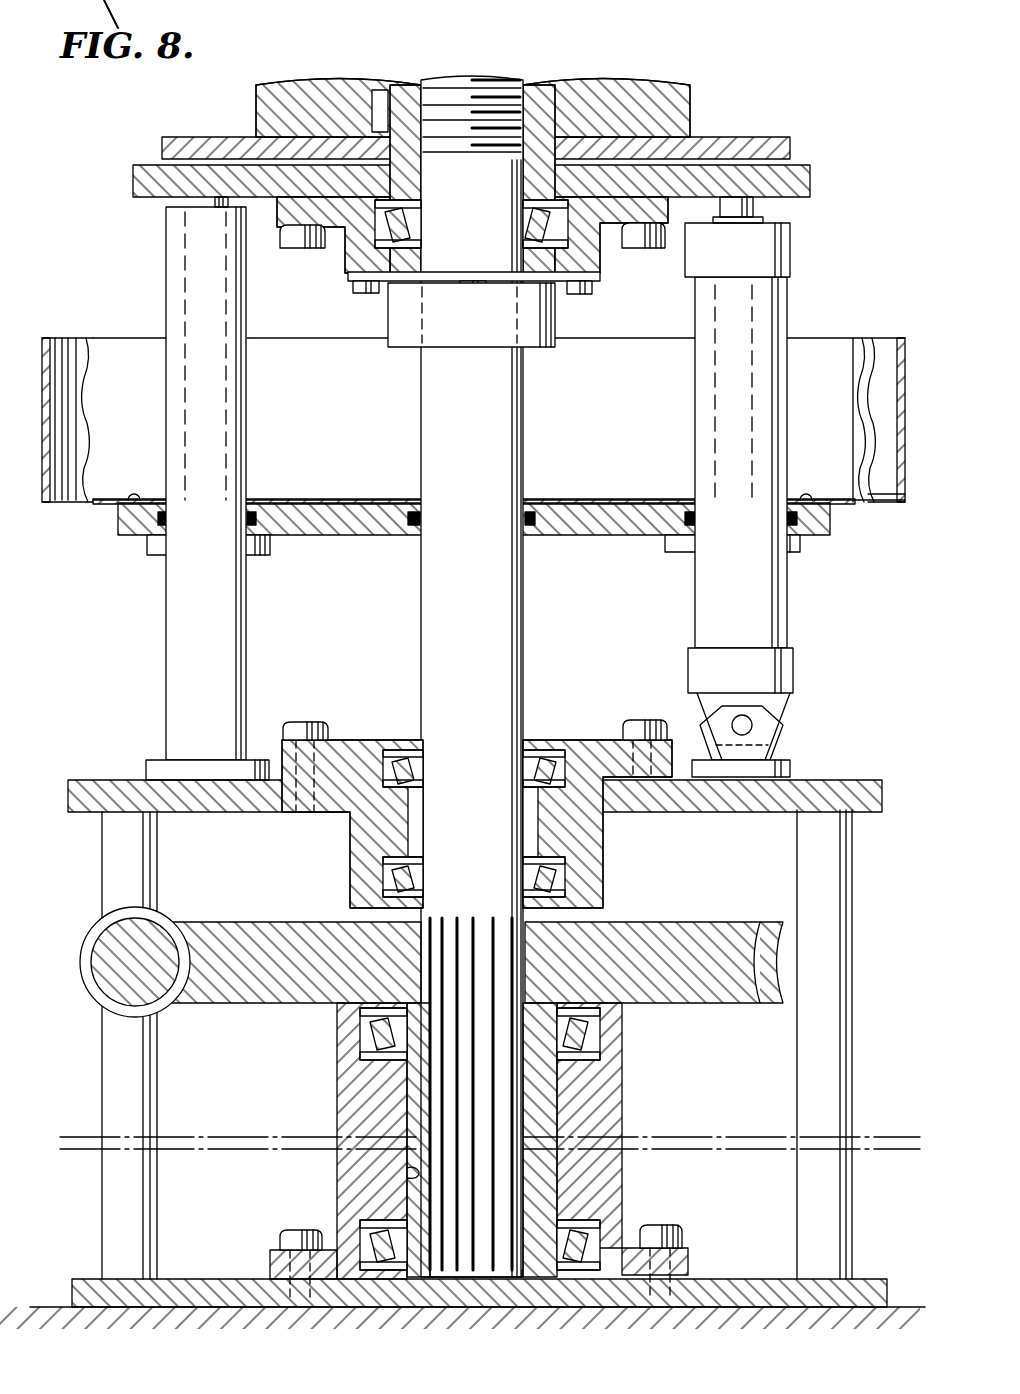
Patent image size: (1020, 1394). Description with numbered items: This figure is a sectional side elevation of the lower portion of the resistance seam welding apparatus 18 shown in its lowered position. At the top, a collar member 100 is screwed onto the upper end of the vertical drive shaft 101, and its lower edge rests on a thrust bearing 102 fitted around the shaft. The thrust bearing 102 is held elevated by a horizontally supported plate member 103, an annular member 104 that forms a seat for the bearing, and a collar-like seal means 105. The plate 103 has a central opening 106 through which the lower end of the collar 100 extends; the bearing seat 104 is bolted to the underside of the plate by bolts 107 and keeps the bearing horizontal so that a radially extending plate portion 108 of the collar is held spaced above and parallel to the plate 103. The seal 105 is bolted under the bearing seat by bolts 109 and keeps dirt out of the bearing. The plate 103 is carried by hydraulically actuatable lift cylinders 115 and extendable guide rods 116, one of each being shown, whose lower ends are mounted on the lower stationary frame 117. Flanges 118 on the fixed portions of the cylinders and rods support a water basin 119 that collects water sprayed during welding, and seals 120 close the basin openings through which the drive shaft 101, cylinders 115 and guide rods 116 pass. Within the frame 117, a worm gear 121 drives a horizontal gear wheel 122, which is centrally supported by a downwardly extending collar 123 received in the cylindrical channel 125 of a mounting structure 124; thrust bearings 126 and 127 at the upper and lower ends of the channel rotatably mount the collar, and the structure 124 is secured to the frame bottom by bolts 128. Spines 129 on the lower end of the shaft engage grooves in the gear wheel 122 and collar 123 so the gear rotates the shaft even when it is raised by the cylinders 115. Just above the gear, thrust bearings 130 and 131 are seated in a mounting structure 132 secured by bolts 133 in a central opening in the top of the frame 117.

The resistance seam welding apparatus 18 is at (97, 312).
The collar member 100 is at (531, 90).
The drive shaft 101 is at (469, 480).
The thrust bearing 102 is at (370, 232).
The plate member 103 is at (132, 185).
The annular member 104 is at (603, 263).
The seal means 105 is at (400, 342).
The opening 106 is at (390, 172).
The bolts 107 is at (290, 235).
The plate portion 108 is at (763, 147).
The bolts 109 is at (470, 294).
The lift cylinders 115 is at (742, 434).
The guide rods 116 is at (210, 450).
The stationary frame 117 is at (830, 780).
The flanges 118 is at (160, 548).
The water basin 119 is at (830, 334).
The seals 120 is at (260, 518).
The worm gear 121 is at (166, 1007).
The gear wheel 122 is at (240, 922).
The collar 123 is at (345, 1095).
The mounting structure 124 is at (610, 1098).
The cylindrical channel 125 is at (410, 1180).
The thrust bearing 126 is at (600, 1035).
The thrust bearing 127 is at (616, 1226).
The bolts 128 is at (280, 1238).
The spines 129 is at (470, 917).
The thrust bearing 130 is at (537, 745).
The thrust bearing 131 is at (600, 880).
The mounting structure 132 is at (598, 838).
The bolts 133 is at (296, 720).